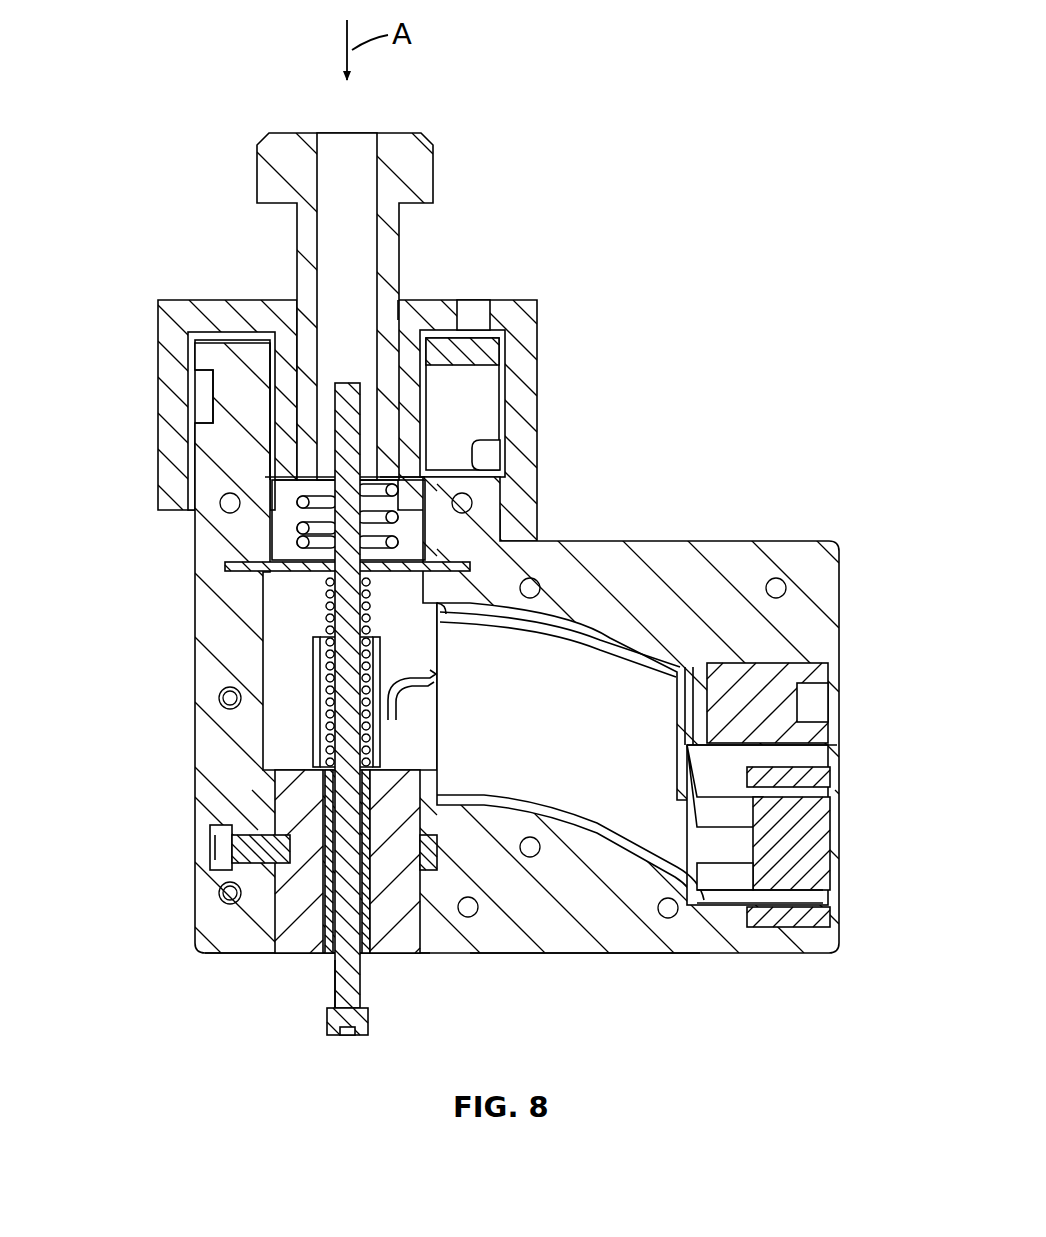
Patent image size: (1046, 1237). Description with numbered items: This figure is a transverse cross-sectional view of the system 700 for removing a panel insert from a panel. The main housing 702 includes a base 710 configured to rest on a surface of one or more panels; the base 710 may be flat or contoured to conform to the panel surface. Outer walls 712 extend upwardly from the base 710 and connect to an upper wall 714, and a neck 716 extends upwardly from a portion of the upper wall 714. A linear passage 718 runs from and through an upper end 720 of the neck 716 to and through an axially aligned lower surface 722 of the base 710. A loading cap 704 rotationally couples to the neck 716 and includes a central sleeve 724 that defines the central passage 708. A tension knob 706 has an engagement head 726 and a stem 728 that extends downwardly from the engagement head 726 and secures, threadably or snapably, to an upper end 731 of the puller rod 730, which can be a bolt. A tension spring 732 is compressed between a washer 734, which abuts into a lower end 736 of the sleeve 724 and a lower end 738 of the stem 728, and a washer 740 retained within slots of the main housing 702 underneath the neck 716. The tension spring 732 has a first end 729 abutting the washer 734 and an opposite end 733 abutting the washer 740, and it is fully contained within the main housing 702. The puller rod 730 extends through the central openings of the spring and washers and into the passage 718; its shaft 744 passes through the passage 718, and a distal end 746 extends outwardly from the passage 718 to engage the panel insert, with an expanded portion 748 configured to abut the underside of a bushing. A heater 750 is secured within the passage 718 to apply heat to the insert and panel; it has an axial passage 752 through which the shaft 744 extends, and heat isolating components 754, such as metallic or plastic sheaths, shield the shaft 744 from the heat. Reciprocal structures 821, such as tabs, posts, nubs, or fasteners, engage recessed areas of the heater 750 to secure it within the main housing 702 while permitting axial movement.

The system for removing the panel insert from the panel 700 is at (185, 65).
The main housing 702 is at (787, 538).
The loading cap 704 is at (542, 384).
The tension knob 706 is at (372, 286).
The central passage 708 is at (400, 305).
The base 710 is at (632, 955).
The outer walls 712 is at (841, 632).
The upper wall 714 is at (672, 540).
The neck 716 is at (216, 470).
The linear passage 718 is at (270, 650).
The upper end of the neck 720 is at (445, 372).
The lower surface of the base 722 is at (258, 955).
The central sleeve 724 is at (300, 334).
The engagement head 726 is at (290, 132).
The stem 728 is at (400, 250).
The first end of the tension spring 729 is at (297, 508).
The puller rod 730 is at (318, 590).
The upper end of the puller rod 731 is at (347, 383).
The tension spring 732 is at (300, 562).
The opposite end of the tension spring 733 is at (412, 540).
The washer 734 is at (450, 487).
The lower end of the sleeve 736 is at (272, 449).
The lower end of the stem 738 is at (413, 467).
The washer 740 is at (420, 575).
The shaft 744 is at (313, 745).
The distal end 746 is at (368, 1022).
The expanded portion 748 is at (348, 1036).
The heater 750 is at (303, 887).
The axial passage 752 is at (330, 980).
The heat isolating components 754 is at (316, 700).
The reciprocal structures 821 is at (212, 855).